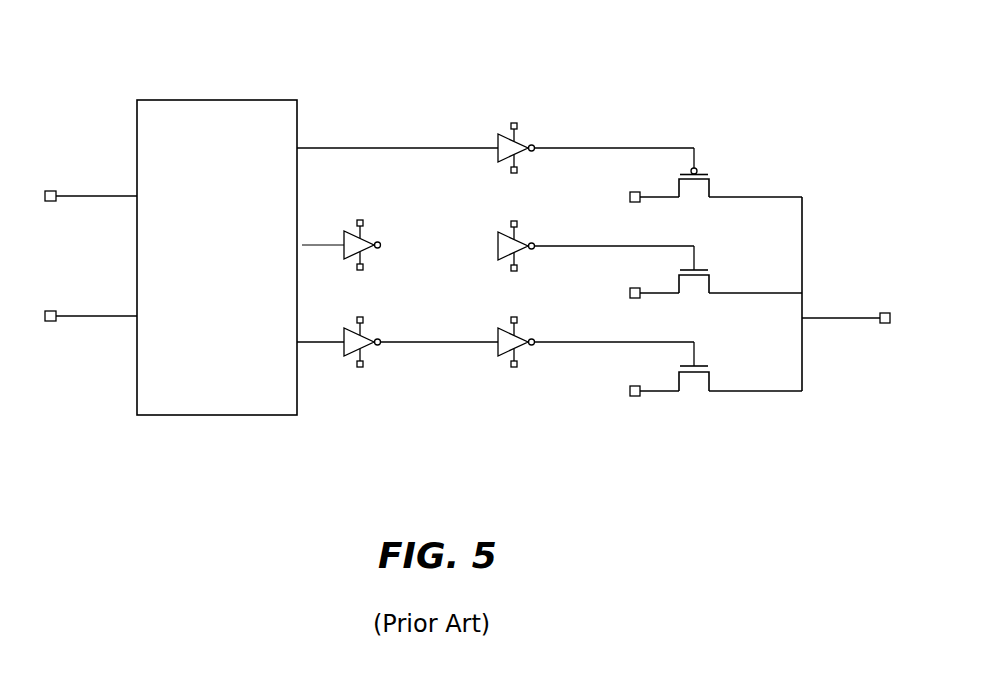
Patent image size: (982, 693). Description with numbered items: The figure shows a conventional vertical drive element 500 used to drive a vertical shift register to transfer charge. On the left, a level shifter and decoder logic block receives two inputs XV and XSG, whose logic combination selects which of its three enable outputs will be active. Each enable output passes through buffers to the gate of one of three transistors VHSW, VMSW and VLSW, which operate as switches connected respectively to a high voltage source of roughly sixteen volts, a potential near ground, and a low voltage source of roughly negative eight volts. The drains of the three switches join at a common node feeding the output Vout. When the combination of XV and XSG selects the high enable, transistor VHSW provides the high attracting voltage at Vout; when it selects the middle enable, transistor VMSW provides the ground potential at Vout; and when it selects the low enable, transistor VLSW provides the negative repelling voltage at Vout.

The vertical drive element 500 is at (316, 63).
The input XV is at (89, 187).
The input XSG is at (87, 307).
The transistor VHSW is at (714, 185).
The transistor VMSW is at (714, 284).
The transistor VLSW is at (714, 381).
The output Vout is at (848, 310).